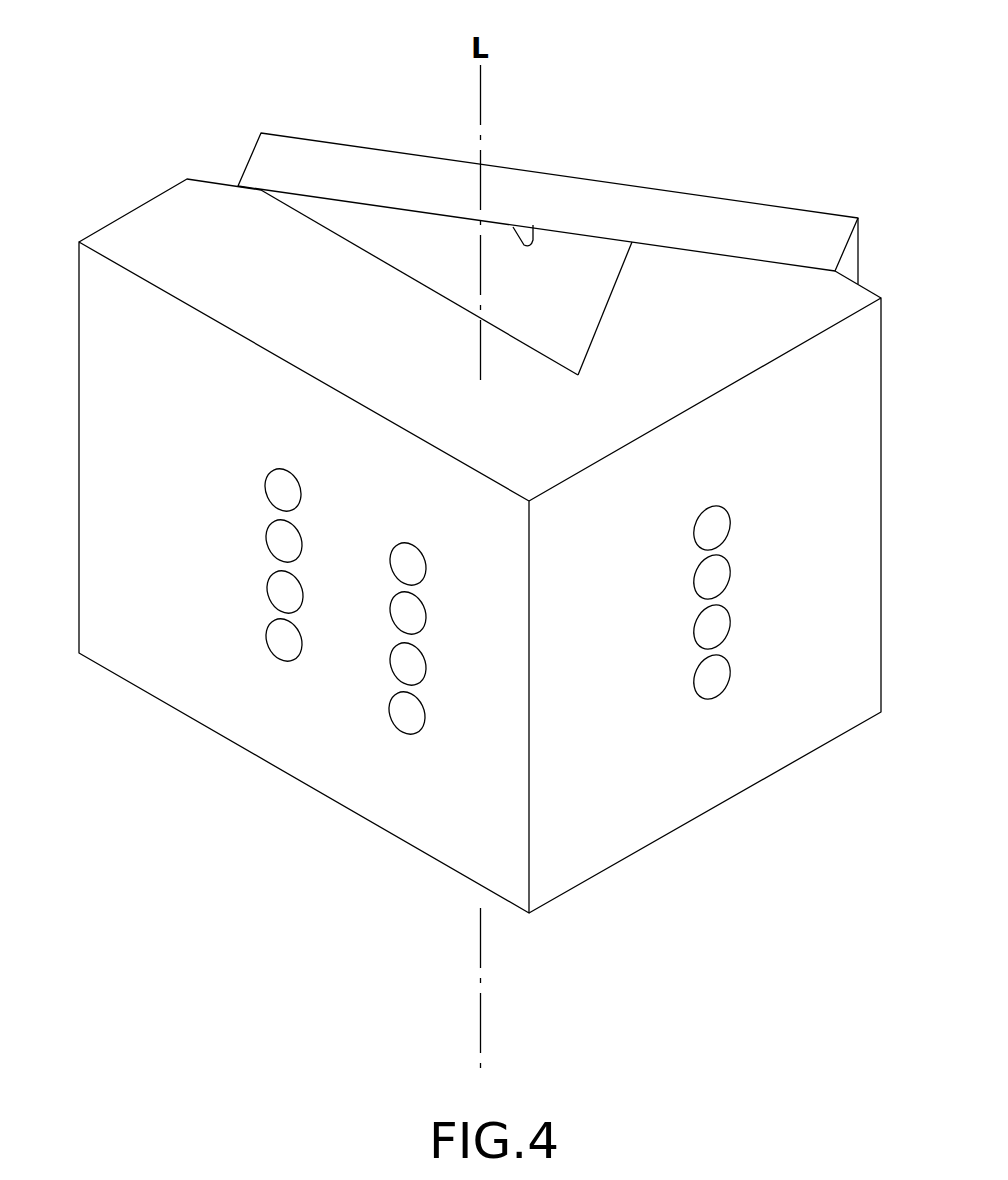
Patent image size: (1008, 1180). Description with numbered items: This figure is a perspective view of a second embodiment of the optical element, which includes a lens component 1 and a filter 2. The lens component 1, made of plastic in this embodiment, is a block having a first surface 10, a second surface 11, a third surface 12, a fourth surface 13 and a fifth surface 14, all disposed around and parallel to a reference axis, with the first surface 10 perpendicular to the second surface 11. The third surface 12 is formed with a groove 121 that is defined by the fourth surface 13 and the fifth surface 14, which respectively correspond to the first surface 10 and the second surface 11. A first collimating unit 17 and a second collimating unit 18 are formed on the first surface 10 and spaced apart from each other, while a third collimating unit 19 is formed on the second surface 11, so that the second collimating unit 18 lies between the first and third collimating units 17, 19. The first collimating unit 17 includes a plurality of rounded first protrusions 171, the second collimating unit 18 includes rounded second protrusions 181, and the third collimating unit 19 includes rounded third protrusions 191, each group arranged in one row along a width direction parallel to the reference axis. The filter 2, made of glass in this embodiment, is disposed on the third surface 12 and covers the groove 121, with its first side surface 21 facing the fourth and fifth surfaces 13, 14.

The lens component 1 is at (457, 483).
The first surface 10 is at (125, 640).
The second surface 11 is at (647, 805).
The third surface 12 is at (480, 198).
The groove 121 is at (471, 198).
The fourth surface 13 is at (344, 238).
The fifth surface 14 is at (616, 278).
The first collimating unit 17 is at (200, 646).
The first protrusions 171 is at (273, 592).
The second collimating unit 18 is at (361, 733).
The second protrusions 181 is at (405, 718).
The third collimating unit 19 is at (786, 692).
The third protrusions 191 is at (715, 692).
The filter 2 is at (548, 144).
The first side surface 21 is at (533, 225).